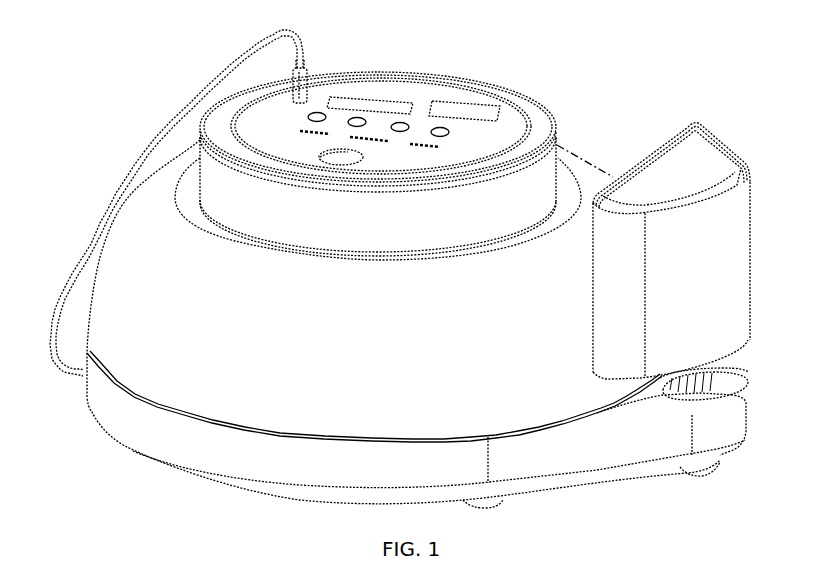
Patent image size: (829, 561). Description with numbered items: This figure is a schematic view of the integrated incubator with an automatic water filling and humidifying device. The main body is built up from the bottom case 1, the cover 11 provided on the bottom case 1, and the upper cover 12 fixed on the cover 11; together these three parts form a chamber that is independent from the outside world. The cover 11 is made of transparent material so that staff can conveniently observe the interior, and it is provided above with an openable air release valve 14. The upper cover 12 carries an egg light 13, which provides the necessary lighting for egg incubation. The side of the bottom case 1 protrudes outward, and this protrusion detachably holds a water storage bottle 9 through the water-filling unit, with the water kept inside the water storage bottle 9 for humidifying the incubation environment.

The bottom case 1 is at (140, 415).
The water storage bottle 9 is at (693, 167).
The cover 11 is at (190, 305).
The upper cover 12 is at (277, 102).
The egg light 13 is at (200, 143).
The air release valve 14 is at (175, 195).